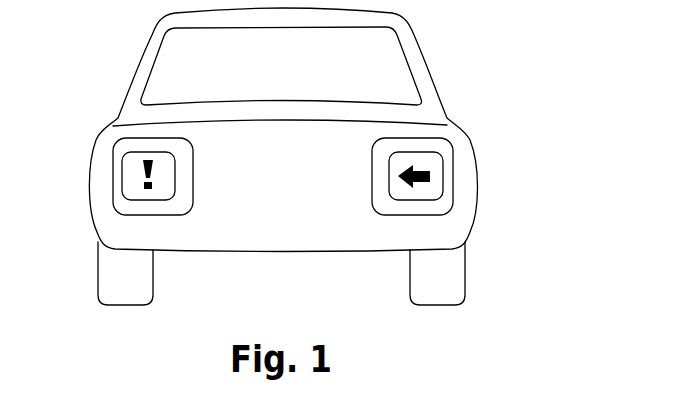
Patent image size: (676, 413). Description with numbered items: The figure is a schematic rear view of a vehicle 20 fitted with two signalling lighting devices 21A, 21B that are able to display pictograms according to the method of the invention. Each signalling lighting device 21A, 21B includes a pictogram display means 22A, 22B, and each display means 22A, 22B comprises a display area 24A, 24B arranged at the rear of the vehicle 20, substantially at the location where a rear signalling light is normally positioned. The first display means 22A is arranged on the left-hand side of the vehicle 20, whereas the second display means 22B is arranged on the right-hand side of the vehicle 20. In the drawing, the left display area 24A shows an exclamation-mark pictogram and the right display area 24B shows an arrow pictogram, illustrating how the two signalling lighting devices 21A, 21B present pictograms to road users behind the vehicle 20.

The vehicle 20 is at (445, 71).
The signalling lighting device 21A is at (118, 219).
The signalling lighting device 21B is at (446, 219).
The first display means 22A is at (153, 200).
The second display means 22B is at (408, 200).
The display area 24A is at (142, 159).
The display area 24B is at (427, 160).